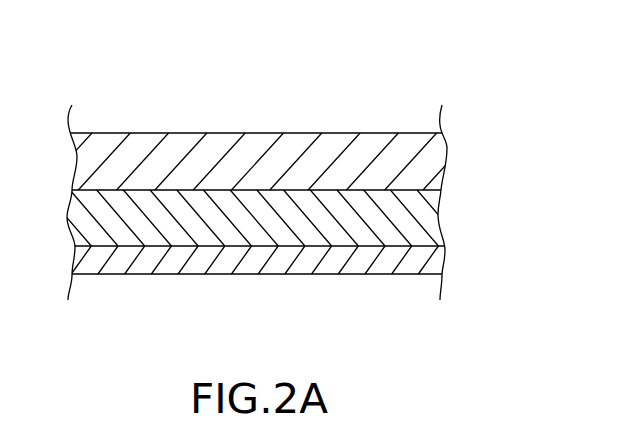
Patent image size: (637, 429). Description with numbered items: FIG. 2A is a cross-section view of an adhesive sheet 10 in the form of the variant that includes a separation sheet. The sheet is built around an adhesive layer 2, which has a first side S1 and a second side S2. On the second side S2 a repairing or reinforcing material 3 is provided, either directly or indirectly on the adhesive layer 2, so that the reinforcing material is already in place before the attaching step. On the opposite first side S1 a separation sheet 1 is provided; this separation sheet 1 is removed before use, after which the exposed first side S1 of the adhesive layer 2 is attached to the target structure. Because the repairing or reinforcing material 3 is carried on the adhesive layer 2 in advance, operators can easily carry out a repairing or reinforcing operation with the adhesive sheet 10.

The separation sheet 1 is at (432, 257).
The adhesive layer 2 is at (430, 217).
The repairing or reinforcing material 3 is at (438, 162).
The first side S1 is at (391, 247).
The second side S2 is at (373, 190).
The adhesive sheet 10 is at (273, 208).